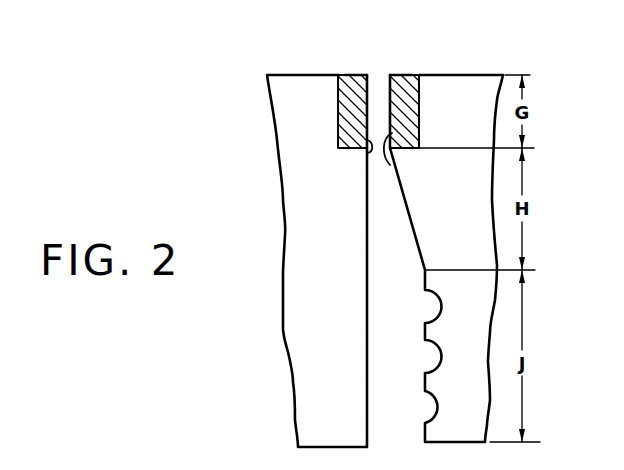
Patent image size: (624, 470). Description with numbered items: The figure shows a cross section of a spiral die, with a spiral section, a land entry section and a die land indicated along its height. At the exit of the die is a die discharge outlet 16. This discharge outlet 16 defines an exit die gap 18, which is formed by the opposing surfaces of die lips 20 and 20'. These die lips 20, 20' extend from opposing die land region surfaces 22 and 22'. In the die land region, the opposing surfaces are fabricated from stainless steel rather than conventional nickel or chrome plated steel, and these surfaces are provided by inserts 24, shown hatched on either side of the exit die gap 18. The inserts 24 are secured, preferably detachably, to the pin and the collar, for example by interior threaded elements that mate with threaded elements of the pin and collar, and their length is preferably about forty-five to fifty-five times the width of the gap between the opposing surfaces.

The die discharge outlet 16 is at (375, 79).
The exit die gap 18 is at (381, 79).
The die lip 20 is at (341, 57).
The die lip 20' is at (414, 57).
The die land region surface 22 is at (342, 165).
The die land region surface 22' is at (422, 162).
The insert 24 is at (343, 115).